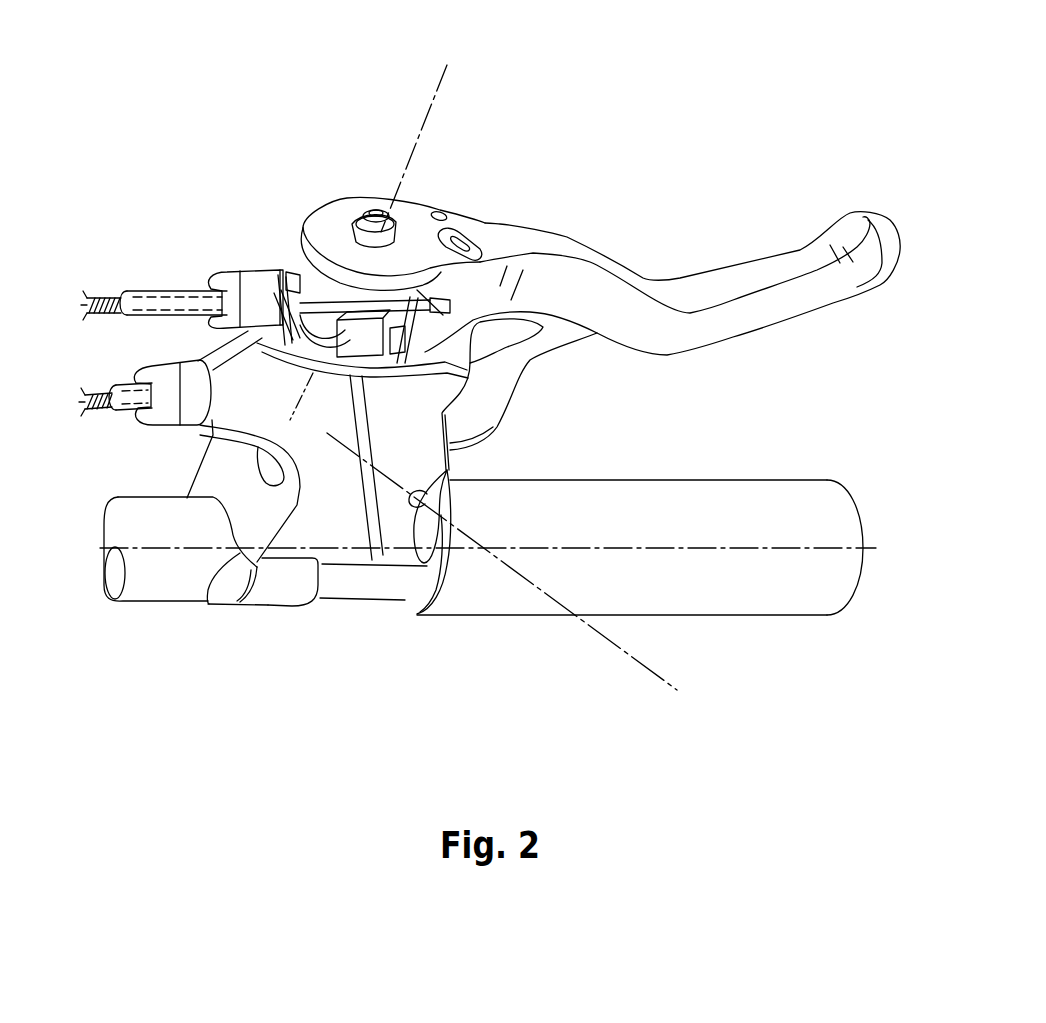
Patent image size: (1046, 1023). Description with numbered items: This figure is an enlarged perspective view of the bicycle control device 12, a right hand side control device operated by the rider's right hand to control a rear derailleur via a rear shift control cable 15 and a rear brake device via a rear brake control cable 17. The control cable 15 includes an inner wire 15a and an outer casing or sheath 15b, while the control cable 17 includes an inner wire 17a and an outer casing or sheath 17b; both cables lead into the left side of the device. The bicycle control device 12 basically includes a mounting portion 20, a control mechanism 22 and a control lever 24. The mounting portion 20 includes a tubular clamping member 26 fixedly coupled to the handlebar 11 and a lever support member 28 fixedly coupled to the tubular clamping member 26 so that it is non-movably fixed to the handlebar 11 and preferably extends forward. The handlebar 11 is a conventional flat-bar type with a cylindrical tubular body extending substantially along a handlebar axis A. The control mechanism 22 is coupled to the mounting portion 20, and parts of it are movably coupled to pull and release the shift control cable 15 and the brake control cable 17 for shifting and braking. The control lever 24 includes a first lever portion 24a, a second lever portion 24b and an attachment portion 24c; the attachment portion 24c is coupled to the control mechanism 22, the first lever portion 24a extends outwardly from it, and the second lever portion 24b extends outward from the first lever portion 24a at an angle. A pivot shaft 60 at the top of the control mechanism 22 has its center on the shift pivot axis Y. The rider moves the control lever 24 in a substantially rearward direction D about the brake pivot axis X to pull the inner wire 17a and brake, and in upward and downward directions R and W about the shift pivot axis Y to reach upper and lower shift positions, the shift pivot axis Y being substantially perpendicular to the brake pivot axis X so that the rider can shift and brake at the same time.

The handlebar 11 is at (166, 600).
The bicycle control device 12 is at (627, 130).
The rear shift control cable 15 is at (163, 280).
The inner wire 15a is at (104, 316).
The outer casing or sheath 15b is at (138, 289).
The rear brake control cable 17 is at (119, 382).
The inner wire 17a is at (97, 412).
The outer casing or sheath 17b is at (130, 416).
The mounting portion 20 is at (343, 572).
The control mechanism 22 is at (280, 245).
The control lever 24 is at (596, 224).
The first lever portion 24a is at (713, 268).
The second lever portion 24b is at (507, 397).
The attachment portion 24c is at (412, 205).
The tubular clamping member 26 is at (270, 605).
The lever support member 28 is at (238, 556).
The pivot shaft 60 is at (379, 210).
The handlebar axis A is at (810, 547).
The brake pivot axis X is at (623, 650).
The shift pivot axis Y is at (431, 86).
The downward direction W is at (813, 207).
The upward direction R is at (875, 305).
The rearward direction D is at (798, 323).